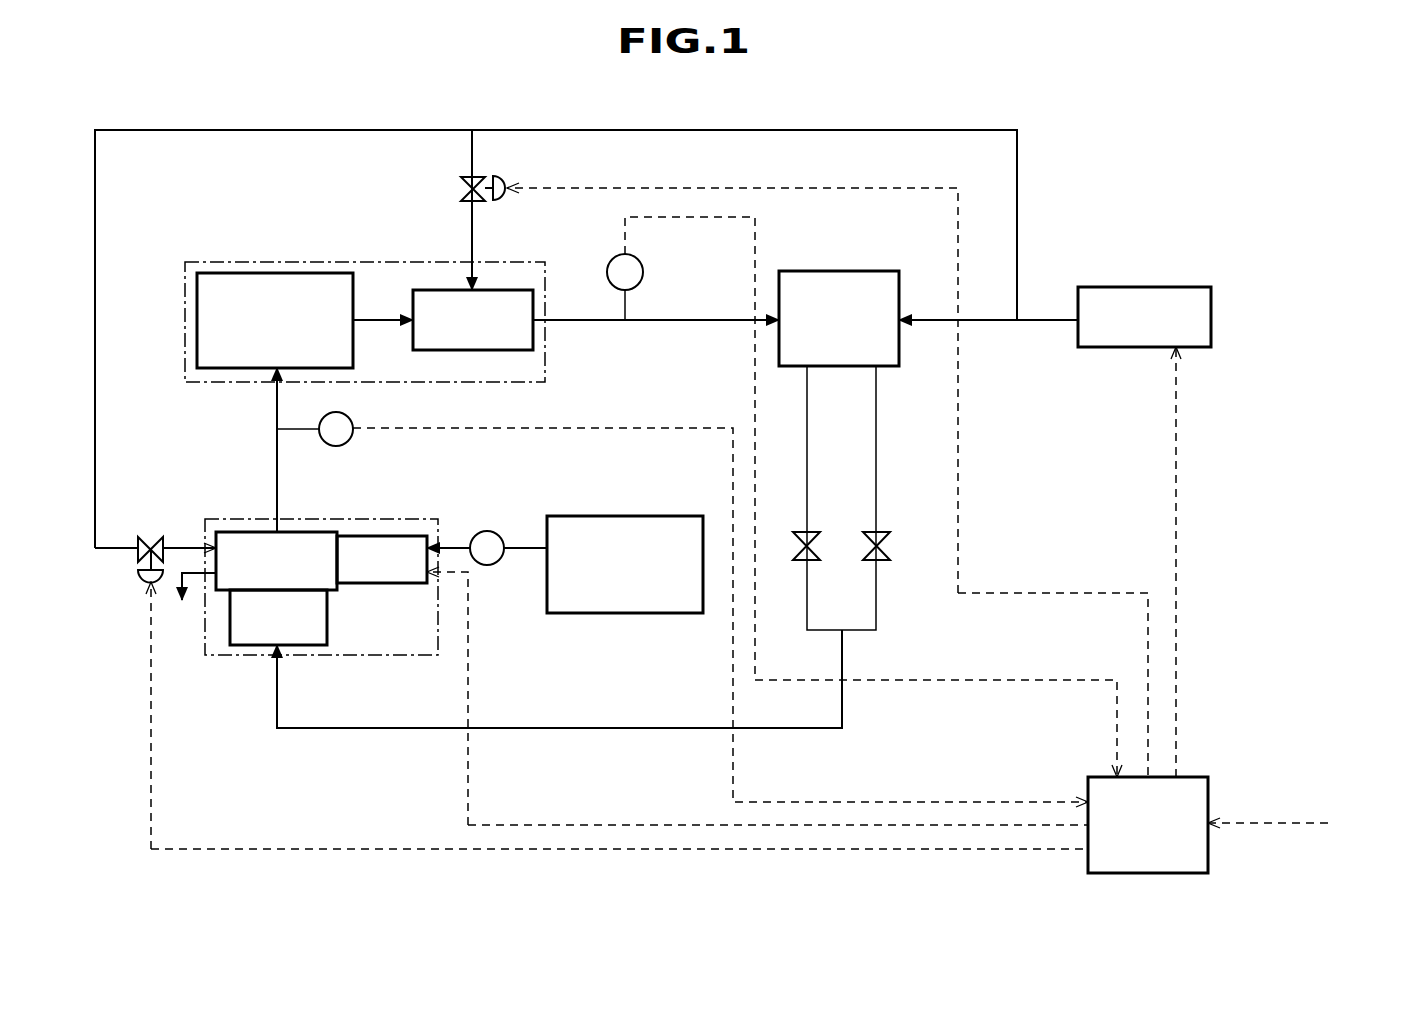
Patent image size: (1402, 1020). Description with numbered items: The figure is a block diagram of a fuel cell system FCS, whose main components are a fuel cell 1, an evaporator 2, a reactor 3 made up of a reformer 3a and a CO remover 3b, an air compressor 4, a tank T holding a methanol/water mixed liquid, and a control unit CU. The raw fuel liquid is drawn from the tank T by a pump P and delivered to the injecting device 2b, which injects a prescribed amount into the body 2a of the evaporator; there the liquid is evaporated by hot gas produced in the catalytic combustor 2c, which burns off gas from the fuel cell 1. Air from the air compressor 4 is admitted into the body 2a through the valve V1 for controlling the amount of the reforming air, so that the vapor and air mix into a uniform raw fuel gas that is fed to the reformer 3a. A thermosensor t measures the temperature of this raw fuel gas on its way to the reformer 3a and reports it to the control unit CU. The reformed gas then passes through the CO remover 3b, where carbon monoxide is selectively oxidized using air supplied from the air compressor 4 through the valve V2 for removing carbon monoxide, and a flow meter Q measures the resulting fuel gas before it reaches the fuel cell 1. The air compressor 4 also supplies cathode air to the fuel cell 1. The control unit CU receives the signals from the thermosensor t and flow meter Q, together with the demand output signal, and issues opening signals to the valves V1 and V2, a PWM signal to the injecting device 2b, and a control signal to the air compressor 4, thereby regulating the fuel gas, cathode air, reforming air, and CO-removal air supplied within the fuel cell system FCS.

The fuel cell 1 is at (868, 271).
The evaporator 2 is at (328, 519).
The body of the evaporator 2a is at (247, 532).
The injecting device 2b is at (400, 536).
The catalytic combustor 2c is at (252, 645).
The reactor 3 is at (380, 262).
The reformer 3a is at (264, 273).
The CO remover 3b is at (497, 290).
The air compressor 4 is at (1180, 287).
The valve for controlling the amount of the reforming air V1 is at (142, 582).
The valve for removing carbon monoxide V2 is at (500, 176).
The tank T is at (673, 516).
The pump P is at (757, 678).
The flow meter Q is at (862, 497).
The thermosensor t is at (682, 585).
The control unit CU is at (1138, 873).
The fuel cell system FCS is at (1118, 222).